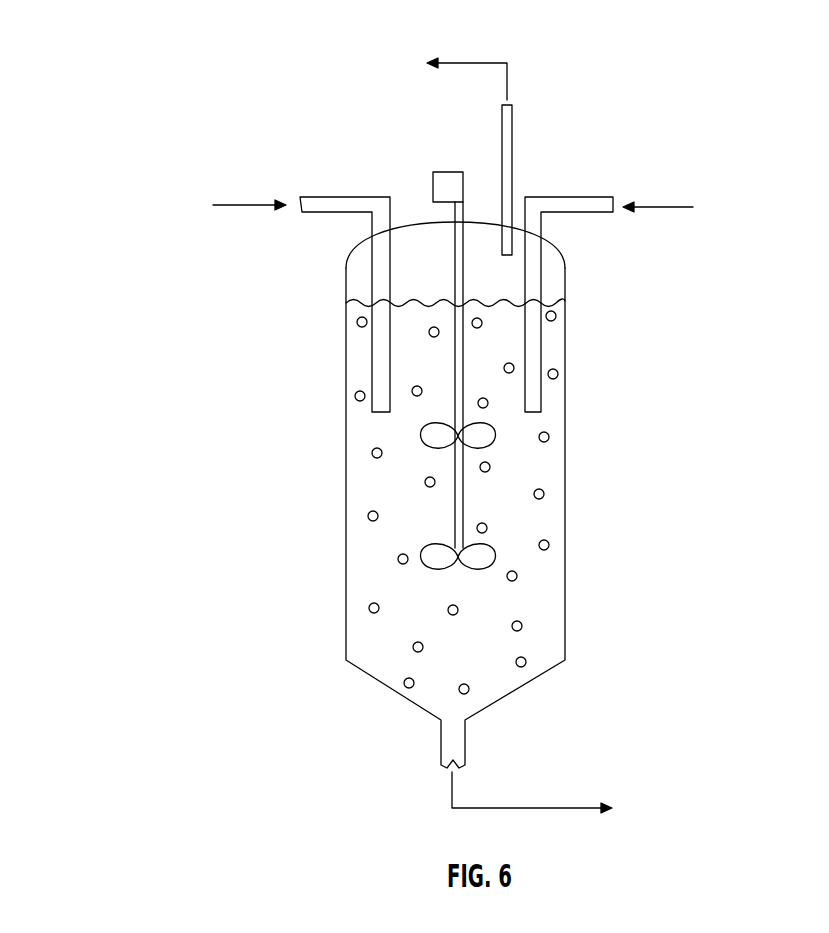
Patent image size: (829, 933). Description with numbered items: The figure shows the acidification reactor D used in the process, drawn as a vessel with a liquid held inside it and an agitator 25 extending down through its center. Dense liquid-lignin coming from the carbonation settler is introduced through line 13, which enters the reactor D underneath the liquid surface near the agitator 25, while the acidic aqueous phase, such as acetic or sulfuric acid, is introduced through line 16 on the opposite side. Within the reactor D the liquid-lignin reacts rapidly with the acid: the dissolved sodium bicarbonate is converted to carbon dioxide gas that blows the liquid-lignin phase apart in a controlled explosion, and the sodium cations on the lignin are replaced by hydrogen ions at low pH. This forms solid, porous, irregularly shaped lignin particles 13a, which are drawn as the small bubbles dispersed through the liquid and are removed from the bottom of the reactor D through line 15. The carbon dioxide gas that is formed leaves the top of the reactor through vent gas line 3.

The vent gas line 3 is at (470, 63).
The line 13 is at (248, 205).
The line 16 is at (660, 207).
The acidification reactor D is at (597, 398).
The lignin particles 13a is at (368, 516).
The agitator 25 is at (462, 496).
The line 15 is at (540, 808).